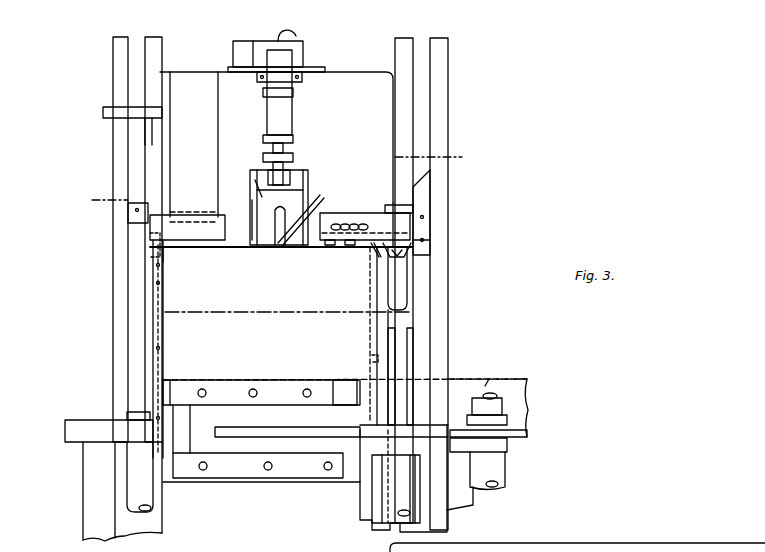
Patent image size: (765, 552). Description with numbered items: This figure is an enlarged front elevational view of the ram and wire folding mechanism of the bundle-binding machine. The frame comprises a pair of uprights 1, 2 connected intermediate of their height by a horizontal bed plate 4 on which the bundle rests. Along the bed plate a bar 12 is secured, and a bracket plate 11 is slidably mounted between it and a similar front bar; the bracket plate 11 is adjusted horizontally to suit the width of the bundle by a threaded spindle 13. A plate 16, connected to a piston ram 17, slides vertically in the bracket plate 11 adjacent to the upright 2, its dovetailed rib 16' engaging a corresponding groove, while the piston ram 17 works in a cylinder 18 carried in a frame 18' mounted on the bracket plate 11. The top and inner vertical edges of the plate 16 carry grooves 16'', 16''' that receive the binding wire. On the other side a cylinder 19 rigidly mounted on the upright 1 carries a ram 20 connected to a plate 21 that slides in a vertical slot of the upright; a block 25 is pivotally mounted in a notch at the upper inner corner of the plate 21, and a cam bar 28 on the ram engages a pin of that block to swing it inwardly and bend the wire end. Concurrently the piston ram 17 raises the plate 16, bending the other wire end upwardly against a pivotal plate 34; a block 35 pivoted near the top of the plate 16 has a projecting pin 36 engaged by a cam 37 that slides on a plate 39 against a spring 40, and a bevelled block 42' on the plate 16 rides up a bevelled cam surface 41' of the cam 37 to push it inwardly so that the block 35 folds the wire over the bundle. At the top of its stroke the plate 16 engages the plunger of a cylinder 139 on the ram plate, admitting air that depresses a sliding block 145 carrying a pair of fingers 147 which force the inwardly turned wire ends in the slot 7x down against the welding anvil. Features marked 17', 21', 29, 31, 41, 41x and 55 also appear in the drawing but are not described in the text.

The upright 1 is at (114, 320).
The upright 2 is at (449, 346).
The bed plate 4 is at (600, 545).
The slot 7x is at (262, 197).
The bracket plate 11 is at (243, 448).
The bar 12 is at (232, 388).
The spindle 13 is at (275, 179).
The plate 16 is at (366, 375).
The dovetailed rib 16' is at (442, 376).
The groove 16'' is at (376, 215).
The groove 16''' is at (358, 355).
The piston ram 17 is at (435, 336).
The guide bracket 17' is at (432, 262).
The cylinder 18 is at (394, 494).
The frame 18' is at (383, 478).
The cylinder 19 is at (136, 487).
The ram 20 is at (138, 344).
The plate 21 is at (122, 239).
The clamp block 21' is at (116, 217).
The block 25 is at (203, 243).
The cam bar 28 is at (152, 243).
The support 29 is at (172, 394).
The pin 31 is at (165, 262).
The pivotal plate 34 is at (360, 380).
The block 35 is at (352, 247).
The pin 36 is at (332, 246).
The cam 37 is at (381, 253).
The plate 39 is at (283, 248).
The spring 40 is at (343, 226).
The bracket 41 is at (487, 430).
The bracket pin 41x is at (487, 380).
The bevelled cam surface 41' is at (450, 238).
The bevelled block 42' is at (449, 212).
The cross bar 55 is at (108, 114).
The cylinder 139 is at (296, 116).
The sliding block 145 is at (298, 172).
The fingers 147 is at (310, 190).